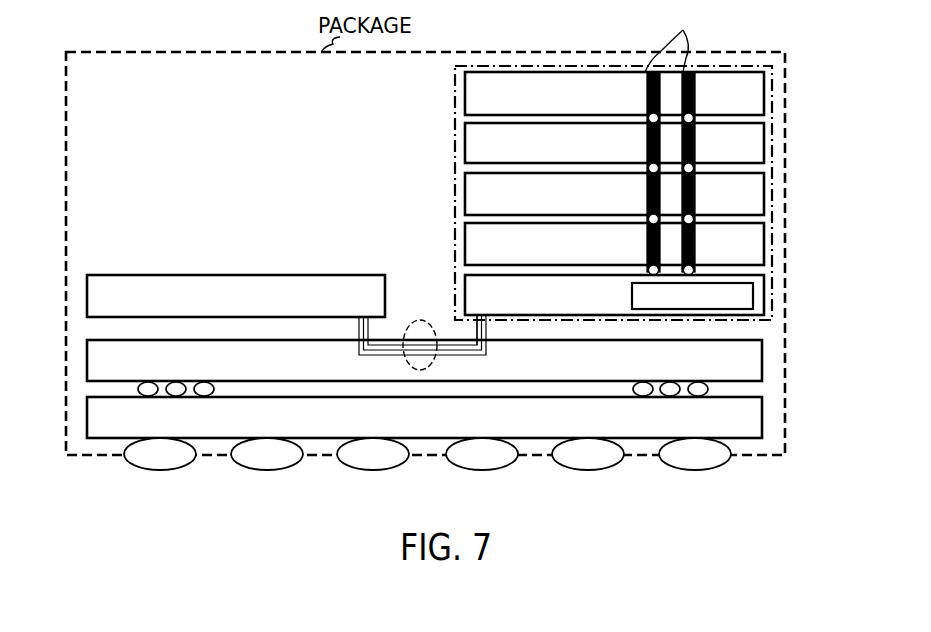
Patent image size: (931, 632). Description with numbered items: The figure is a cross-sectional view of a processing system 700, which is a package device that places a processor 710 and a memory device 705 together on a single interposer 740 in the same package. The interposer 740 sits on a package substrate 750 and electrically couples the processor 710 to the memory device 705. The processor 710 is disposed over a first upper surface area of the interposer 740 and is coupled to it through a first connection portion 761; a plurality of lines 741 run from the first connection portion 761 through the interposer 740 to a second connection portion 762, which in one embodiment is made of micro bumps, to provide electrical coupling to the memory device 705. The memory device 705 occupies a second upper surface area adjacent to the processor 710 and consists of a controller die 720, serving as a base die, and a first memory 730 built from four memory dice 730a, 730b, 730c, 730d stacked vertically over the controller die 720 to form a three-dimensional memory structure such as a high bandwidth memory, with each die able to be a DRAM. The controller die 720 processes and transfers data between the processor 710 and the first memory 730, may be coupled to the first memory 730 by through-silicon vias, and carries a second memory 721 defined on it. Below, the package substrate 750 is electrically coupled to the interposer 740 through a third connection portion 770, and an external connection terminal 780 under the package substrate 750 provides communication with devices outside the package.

The processing system 700 is at (173, 48).
The memory device 705 is at (727, 66).
The processor 710 is at (86, 297).
The controller die 720 is at (764, 290).
The second memory 721 is at (753, 303).
The first memory 730 is at (676, 141).
The memory die 730a is at (764, 92).
The memory die 730b is at (764, 142).
The memory die 730c is at (764, 192).
The memory die 730d is at (650, 248).
The interposer 740 is at (764, 364).
The lines 741 is at (418, 315).
The package substrate 750 is at (764, 415).
The first connection portion 761 is at (357, 322).
The second connection portion 762 is at (489, 323).
The third connection portion 770 is at (138, 392).
The external connection terminal 780 is at (145, 470).